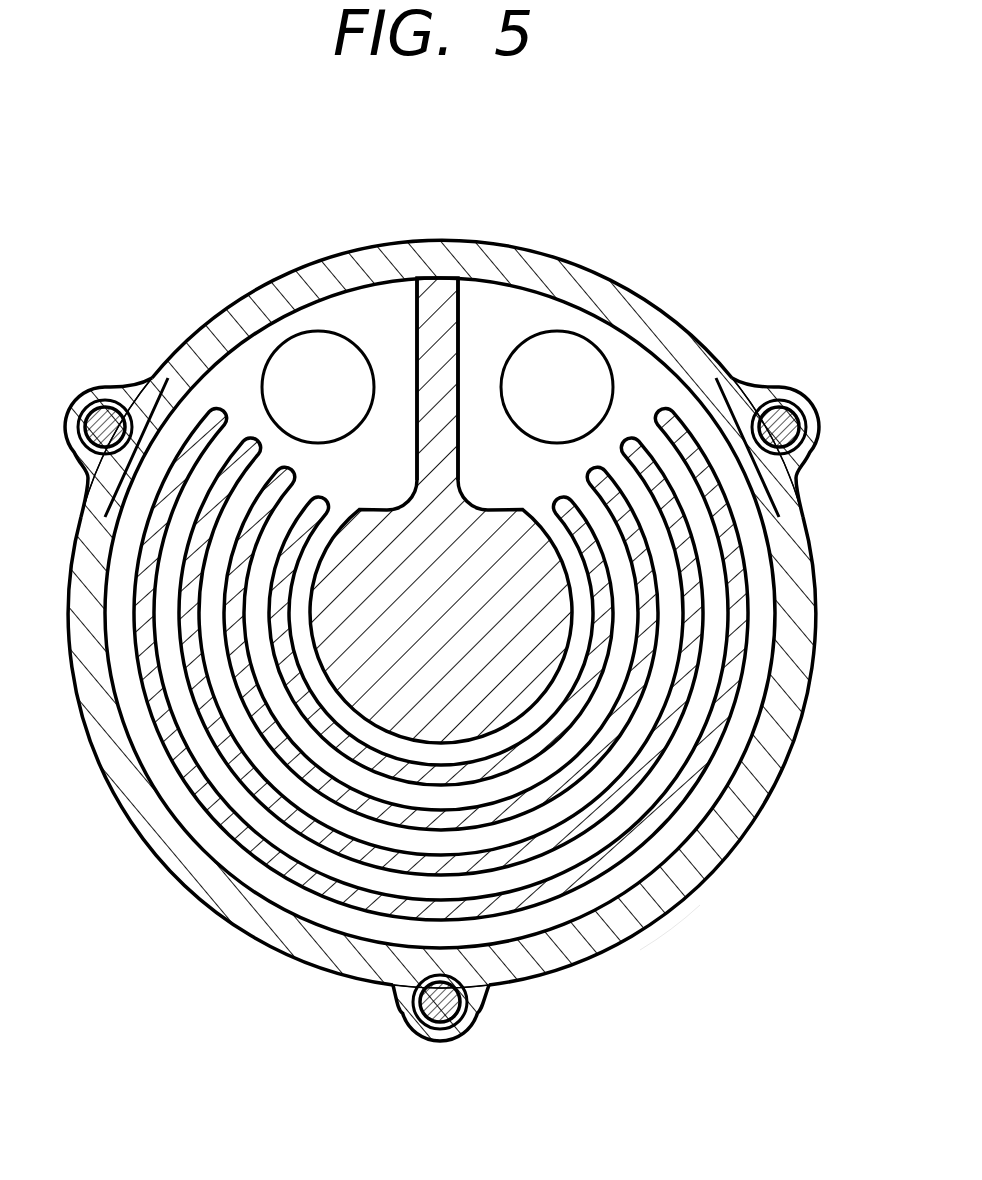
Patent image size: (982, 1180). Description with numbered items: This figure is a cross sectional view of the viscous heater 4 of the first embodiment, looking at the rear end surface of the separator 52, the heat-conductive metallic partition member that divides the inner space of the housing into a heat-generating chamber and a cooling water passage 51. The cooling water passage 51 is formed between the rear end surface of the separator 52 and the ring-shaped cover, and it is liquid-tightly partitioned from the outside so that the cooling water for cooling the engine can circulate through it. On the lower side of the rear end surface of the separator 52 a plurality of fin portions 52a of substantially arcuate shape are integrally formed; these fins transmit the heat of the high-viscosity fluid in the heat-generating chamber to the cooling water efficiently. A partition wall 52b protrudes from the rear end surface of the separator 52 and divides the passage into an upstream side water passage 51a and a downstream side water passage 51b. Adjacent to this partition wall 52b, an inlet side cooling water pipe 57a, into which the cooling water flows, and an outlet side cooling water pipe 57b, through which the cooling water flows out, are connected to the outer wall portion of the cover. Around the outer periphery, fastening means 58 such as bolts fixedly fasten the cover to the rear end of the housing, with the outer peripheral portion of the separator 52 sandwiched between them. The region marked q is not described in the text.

The viscous heater 4 is at (165, 212).
The cooling water passage 51 is at (327, 917).
The upstream side water passage 51a is at (385, 268).
The downstream side water passage 51b is at (508, 296).
The separator 52 is at (603, 462).
The fin portions 52a is at (572, 828).
The partition wall 52b is at (443, 280).
The inlet side cooling water pipe 57a is at (287, 338).
The outlet side cooling water pipe 57b is at (590, 338).
The fastening means 58 is at (100, 420).
The annular ring region q is at (670, 882).